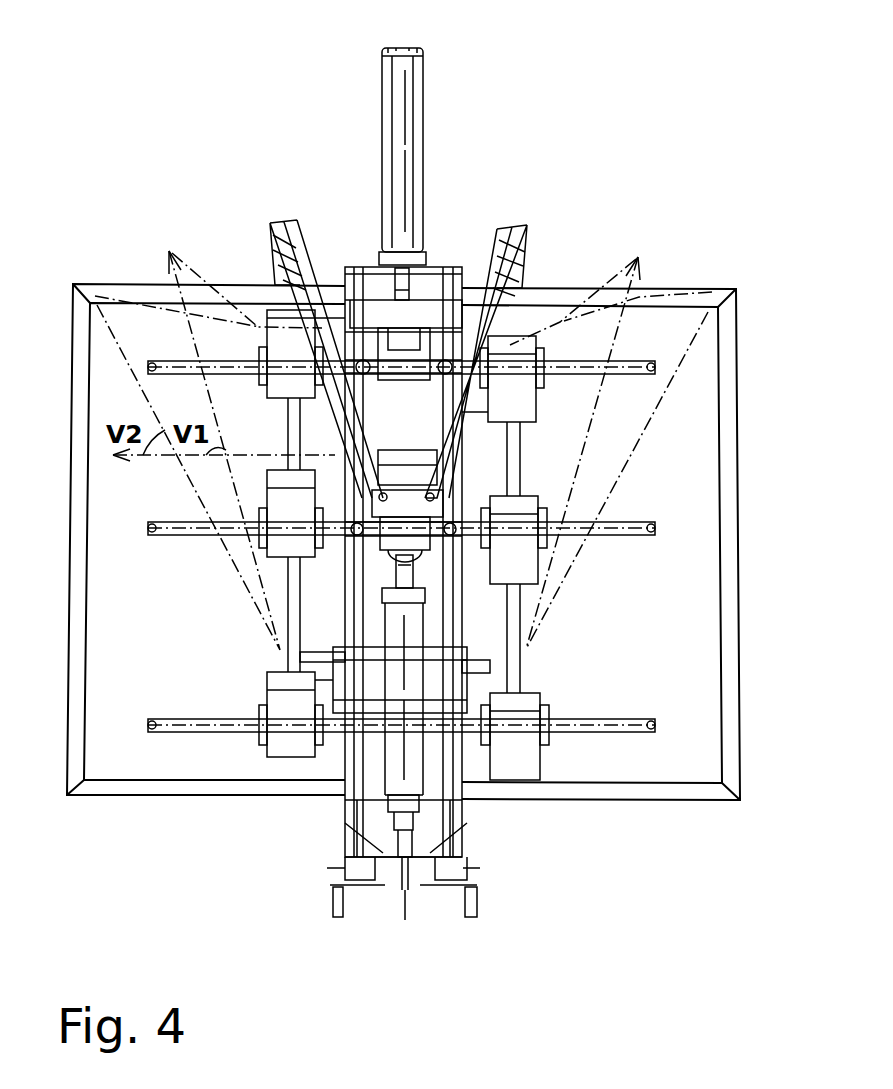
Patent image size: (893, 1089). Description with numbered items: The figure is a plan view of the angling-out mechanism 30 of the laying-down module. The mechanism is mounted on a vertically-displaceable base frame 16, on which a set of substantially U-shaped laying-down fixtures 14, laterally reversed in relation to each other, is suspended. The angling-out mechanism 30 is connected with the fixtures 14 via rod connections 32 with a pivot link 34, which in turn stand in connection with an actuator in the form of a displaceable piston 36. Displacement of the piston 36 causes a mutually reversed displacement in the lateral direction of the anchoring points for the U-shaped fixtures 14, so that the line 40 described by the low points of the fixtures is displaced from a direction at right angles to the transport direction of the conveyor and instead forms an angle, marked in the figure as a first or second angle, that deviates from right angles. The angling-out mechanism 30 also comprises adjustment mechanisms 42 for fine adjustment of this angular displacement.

The laying-down fixtures 14 is at (655, 728).
The base frame 16 is at (728, 458).
The angling-out mechanism 30 is at (282, 853).
The rod connections 32 is at (443, 423).
The pivot link 34 is at (272, 228).
The displaceable piston 36 is at (403, 758).
The line 40 is at (133, 387).
The adjustment mechanisms 42 is at (453, 823).